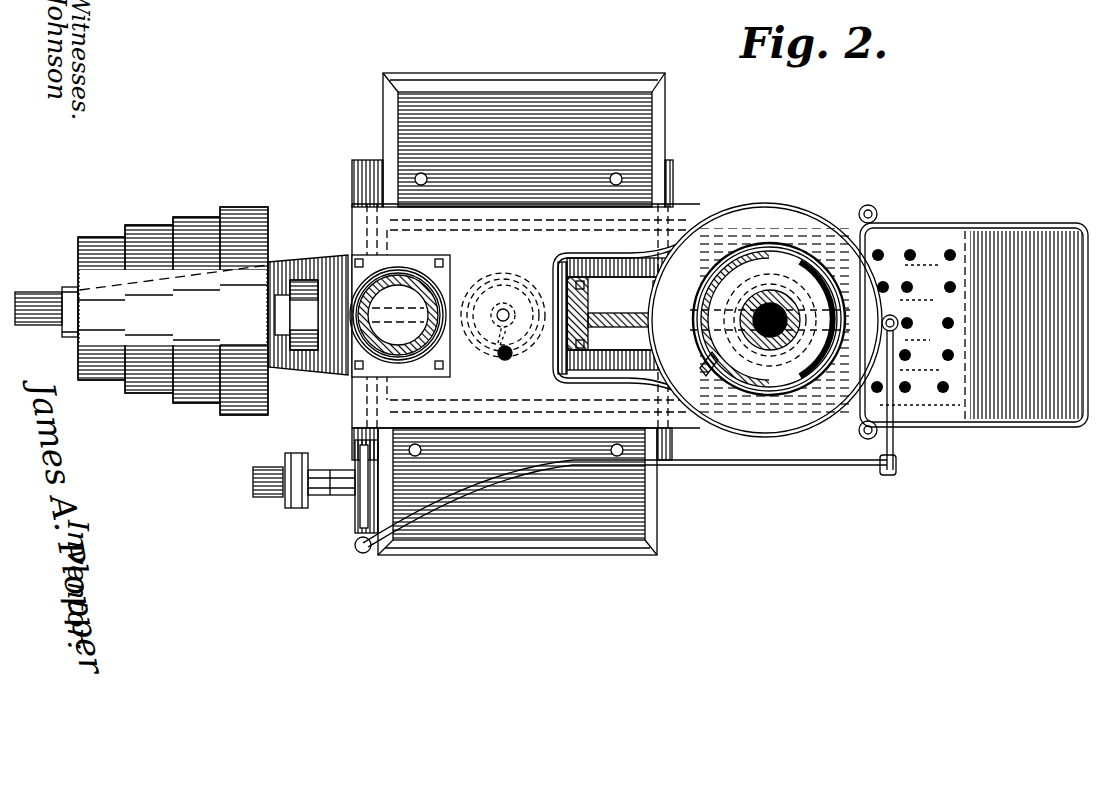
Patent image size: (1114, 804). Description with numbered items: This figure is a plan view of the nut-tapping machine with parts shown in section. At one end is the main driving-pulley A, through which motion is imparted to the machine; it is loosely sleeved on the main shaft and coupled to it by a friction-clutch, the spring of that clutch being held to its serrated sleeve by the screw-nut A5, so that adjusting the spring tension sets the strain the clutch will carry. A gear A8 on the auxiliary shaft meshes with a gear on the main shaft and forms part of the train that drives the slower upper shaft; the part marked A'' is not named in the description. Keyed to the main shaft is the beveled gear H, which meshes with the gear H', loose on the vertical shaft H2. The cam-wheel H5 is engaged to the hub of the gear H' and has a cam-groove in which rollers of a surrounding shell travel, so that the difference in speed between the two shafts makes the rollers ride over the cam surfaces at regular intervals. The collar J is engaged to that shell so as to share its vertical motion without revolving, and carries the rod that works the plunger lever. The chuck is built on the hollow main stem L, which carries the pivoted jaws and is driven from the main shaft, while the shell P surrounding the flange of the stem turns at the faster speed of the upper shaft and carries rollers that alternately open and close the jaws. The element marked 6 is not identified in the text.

The main driving-pulley A is at (173, 311).
The screw-nut A5 is at (62, 334).
The gear A8 is at (300, 352).
The hub flange A'' is at (308, 330).
The beveled gear H is at (537, 314).
The gear H' is at (400, 316).
The vertical shaft H2 is at (626, 434).
The cam-wheel H5 is at (315, 486).
The plate 6 is at (973, 322).
The collar J is at (510, 358).
The main stem or shaft of the chuck L is at (765, 320).
The shell P is at (706, 368).